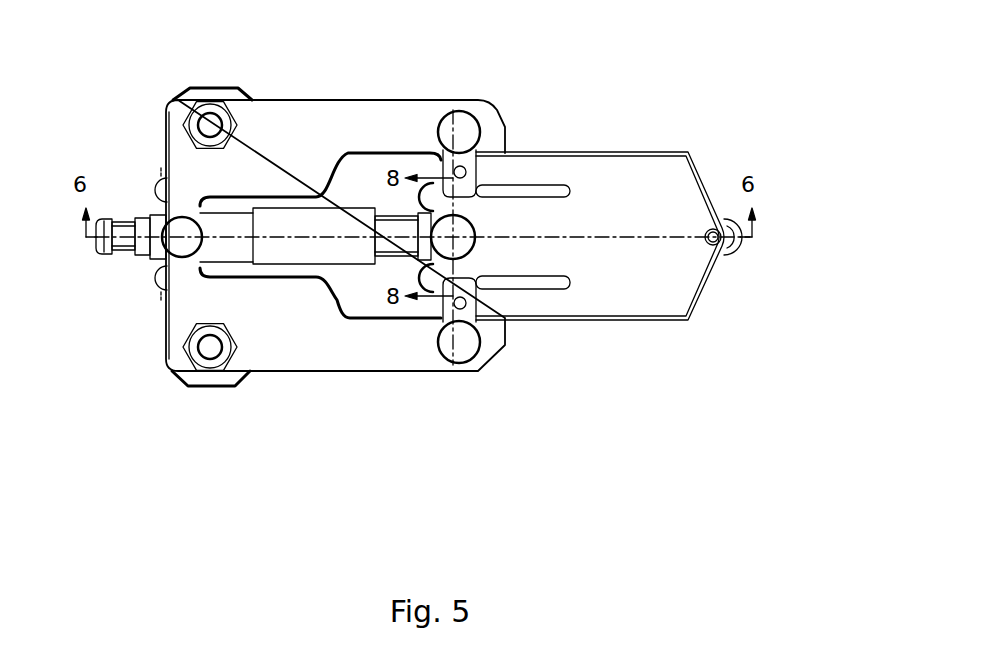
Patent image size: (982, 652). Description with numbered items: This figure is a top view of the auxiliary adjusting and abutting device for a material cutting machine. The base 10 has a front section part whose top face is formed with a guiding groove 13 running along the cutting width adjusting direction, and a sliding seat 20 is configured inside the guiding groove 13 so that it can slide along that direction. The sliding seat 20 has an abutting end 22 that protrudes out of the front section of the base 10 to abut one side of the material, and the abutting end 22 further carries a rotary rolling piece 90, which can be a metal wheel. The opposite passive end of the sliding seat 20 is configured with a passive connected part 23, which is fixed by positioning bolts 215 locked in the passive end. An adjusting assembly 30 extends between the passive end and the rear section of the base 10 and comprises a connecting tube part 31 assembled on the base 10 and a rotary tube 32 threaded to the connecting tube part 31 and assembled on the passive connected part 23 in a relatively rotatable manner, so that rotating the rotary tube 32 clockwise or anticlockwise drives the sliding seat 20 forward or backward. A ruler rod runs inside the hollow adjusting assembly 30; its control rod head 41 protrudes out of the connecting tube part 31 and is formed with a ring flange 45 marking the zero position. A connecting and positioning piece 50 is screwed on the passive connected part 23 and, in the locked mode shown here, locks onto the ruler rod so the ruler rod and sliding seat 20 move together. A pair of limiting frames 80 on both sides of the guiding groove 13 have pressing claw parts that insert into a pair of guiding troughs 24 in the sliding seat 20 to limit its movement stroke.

The base 10 is at (350, 83).
The guiding groove 13 is at (361, 308).
The sliding seat 20 is at (650, 196).
The abutting end 22 is at (735, 248).
The passive connected part 23 is at (381, 206).
The guiding troughs 24 is at (562, 186).
The adjusting assembly 30 is at (287, 349).
The connecting tube part 31 is at (205, 270).
The rotary tube 32 is at (290, 266).
The control rod head 41 is at (120, 254).
The ring flange 45 is at (147, 254).
The connecting and positioning piece 50 is at (480, 206).
The limiting frames 80 is at (493, 209).
The rotary rolling piece 90 is at (742, 275).
The positioning bolts 215 is at (444, 108).